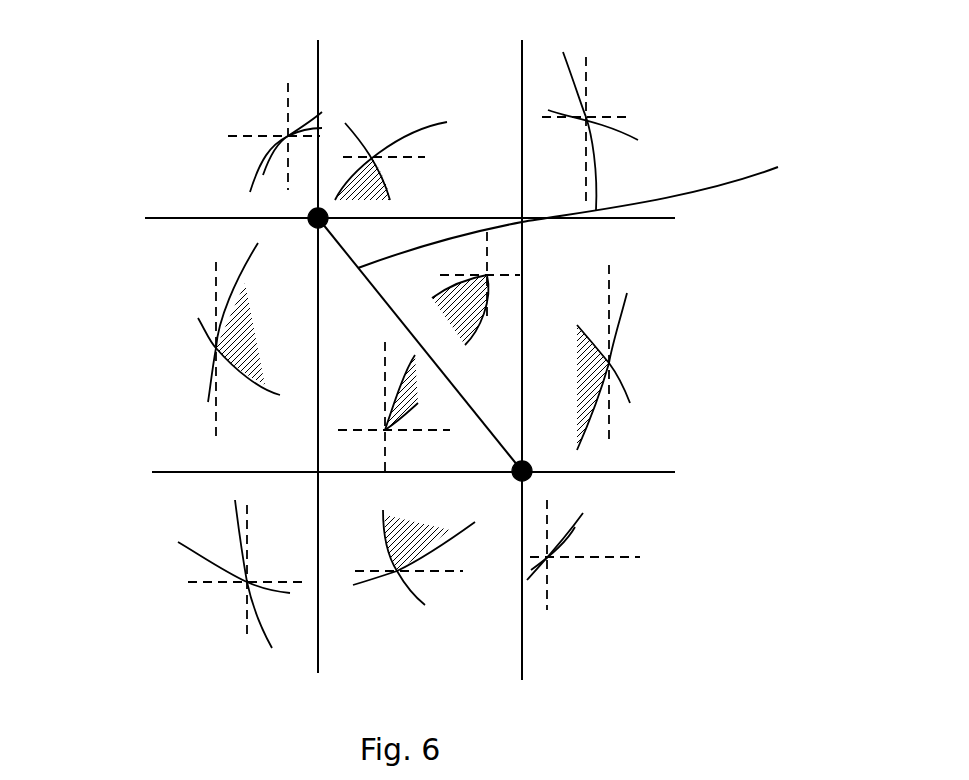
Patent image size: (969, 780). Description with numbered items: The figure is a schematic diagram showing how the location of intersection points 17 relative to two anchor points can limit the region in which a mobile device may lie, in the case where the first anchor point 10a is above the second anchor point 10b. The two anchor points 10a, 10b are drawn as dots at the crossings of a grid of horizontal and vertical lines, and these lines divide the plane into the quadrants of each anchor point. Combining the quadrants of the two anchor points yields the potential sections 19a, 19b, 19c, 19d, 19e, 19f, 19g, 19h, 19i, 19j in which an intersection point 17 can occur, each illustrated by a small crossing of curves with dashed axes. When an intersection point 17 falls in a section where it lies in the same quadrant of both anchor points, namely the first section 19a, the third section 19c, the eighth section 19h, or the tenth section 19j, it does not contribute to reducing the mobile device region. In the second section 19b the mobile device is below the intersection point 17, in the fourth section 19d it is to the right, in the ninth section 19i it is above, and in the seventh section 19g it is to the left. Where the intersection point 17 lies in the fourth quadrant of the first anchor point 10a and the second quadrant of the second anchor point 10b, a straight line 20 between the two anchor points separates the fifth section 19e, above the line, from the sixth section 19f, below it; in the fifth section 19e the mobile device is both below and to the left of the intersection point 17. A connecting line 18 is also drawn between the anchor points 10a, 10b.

The first anchor point 10a is at (318, 218).
The second anchor point 10b is at (527, 473).
The intersection point 17 is at (288, 136).
The connecting line 18 is at (522, 471).
The first section 19a is at (205, 80).
The second section 19b is at (505, 80).
The third section 19c is at (688, 87).
The fourth section 19d is at (203, 261).
The fifth section 19e is at (395, 254).
The sixth section 19f is at (370, 326).
The seventh section 19g is at (671, 250).
The eighth section 19h is at (183, 504).
The ninth section 19i is at (328, 504).
The tenth section 19j is at (674, 508).
The straight line 20 is at (591, 205).